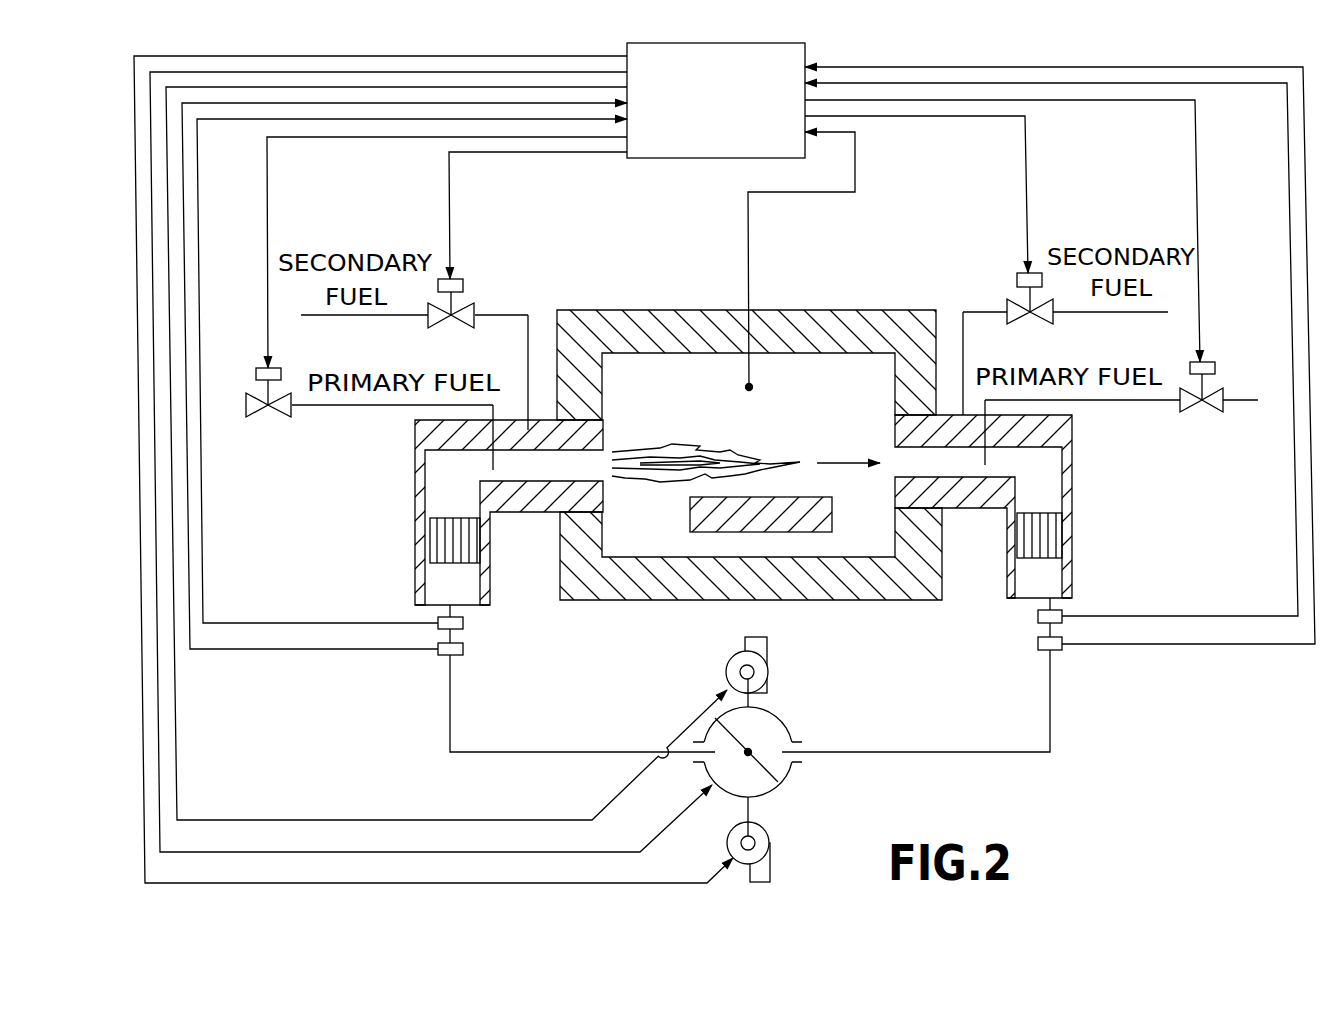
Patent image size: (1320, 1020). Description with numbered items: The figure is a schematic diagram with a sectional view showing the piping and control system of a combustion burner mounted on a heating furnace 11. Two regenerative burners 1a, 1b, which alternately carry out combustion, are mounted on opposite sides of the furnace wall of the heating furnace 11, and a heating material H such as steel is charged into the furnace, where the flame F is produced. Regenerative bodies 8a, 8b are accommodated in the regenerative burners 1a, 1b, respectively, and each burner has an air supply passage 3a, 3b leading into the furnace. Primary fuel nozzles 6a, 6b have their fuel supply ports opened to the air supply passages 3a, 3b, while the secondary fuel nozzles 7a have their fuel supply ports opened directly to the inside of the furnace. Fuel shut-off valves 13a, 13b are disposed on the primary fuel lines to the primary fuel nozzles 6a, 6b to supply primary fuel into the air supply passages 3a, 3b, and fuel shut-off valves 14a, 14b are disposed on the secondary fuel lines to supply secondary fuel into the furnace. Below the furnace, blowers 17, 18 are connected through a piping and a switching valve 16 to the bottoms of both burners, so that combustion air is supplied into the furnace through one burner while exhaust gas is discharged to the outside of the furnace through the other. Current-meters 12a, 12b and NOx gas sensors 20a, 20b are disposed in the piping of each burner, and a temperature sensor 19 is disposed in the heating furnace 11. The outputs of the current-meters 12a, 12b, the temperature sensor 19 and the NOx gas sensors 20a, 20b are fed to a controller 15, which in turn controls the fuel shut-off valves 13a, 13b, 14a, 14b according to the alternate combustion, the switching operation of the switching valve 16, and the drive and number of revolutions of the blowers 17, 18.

The regenerative burner 1a is at (410, 502).
The regenerative burner 1b is at (1078, 505).
The air supply passage 3a is at (533, 472).
The air supply passage 3b is at (962, 470).
The primary fuel nozzle 6a is at (495, 467).
The primary fuel nozzle 6b is at (985, 455).
The secondary fuel nozzle 7a is at (592, 420).
The regenerative body 8a is at (438, 542).
The regenerative body 8b is at (1047, 553).
The heating furnace 11 is at (840, 310).
The current-meter 12a is at (437, 657).
The current-meter 12b is at (1062, 647).
The fuel shut-off valve 13a is at (270, 414).
The fuel shut-off valve 13b is at (1200, 404).
The fuel shut-off valve 14a is at (463, 281).
The fuel shut-off valve 14b is at (1017, 277).
The controller 15 is at (723, 160).
The switching valve 16 is at (773, 793).
The blower 17 is at (767, 687).
The blower 18 is at (770, 848).
The temperature sensor 19 is at (752, 390).
The NOx gas sensor 20a is at (465, 623).
The NOx gas sensor 20b is at (1038, 616).
The flame F is at (710, 445).
The heating material H is at (787, 497).